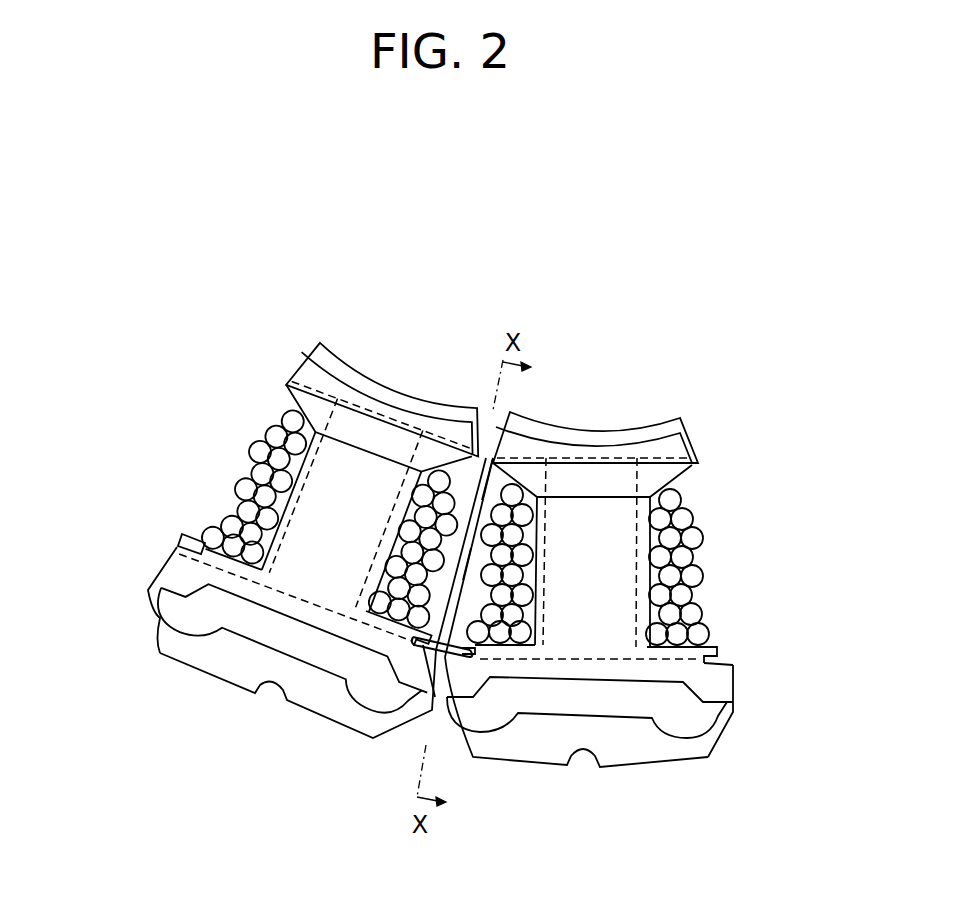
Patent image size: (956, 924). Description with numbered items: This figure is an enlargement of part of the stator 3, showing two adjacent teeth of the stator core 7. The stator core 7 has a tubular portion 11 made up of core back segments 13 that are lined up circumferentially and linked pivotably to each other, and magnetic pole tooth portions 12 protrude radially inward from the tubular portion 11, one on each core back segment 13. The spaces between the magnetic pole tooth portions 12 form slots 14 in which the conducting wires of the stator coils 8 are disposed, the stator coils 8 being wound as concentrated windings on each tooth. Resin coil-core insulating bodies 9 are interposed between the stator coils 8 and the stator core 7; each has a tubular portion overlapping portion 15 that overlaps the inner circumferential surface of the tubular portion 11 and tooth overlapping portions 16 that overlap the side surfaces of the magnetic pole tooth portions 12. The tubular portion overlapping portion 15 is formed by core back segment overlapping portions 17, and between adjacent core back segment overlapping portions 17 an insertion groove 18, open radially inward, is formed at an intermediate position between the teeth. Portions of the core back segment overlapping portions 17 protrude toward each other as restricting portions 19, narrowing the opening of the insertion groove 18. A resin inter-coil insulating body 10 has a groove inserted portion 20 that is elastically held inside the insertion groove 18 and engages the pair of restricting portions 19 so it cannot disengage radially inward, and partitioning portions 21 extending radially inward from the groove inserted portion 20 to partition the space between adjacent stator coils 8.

The stator 3 is at (293, 312).
The stator core 7 is at (150, 637).
The stator coils 8 is at (250, 482).
The coil-core insulating bodies 9 is at (731, 686).
The inter-coil insulating bodies 10 is at (455, 470).
The tubular portion 11 is at (645, 770).
The magnetic pole tooth portions 12 is at (394, 392).
The core back segments 13 is at (303, 703).
The slots 14 is at (490, 487).
The tubular portion overlapping portion 15 is at (686, 640).
The tooth overlapping portions 16 is at (270, 450).
The core back segment overlapping portions 17 is at (227, 560).
The insertion grooves 18 is at (470, 655).
The restricting portions 19 is at (183, 543).
The groove inserted portion 20 is at (425, 650).
The partitioning portions 21 is at (470, 552).